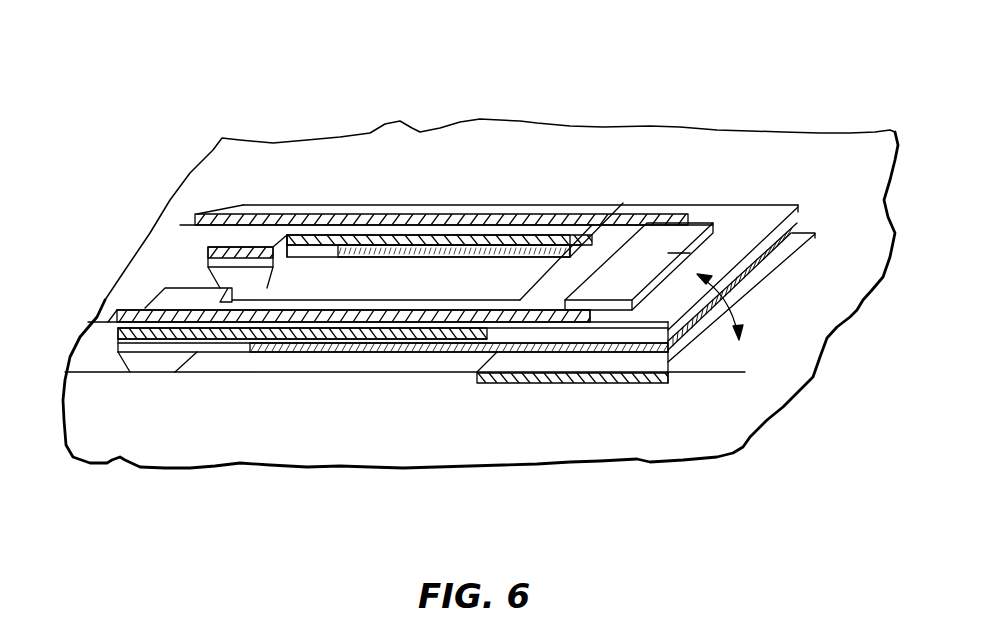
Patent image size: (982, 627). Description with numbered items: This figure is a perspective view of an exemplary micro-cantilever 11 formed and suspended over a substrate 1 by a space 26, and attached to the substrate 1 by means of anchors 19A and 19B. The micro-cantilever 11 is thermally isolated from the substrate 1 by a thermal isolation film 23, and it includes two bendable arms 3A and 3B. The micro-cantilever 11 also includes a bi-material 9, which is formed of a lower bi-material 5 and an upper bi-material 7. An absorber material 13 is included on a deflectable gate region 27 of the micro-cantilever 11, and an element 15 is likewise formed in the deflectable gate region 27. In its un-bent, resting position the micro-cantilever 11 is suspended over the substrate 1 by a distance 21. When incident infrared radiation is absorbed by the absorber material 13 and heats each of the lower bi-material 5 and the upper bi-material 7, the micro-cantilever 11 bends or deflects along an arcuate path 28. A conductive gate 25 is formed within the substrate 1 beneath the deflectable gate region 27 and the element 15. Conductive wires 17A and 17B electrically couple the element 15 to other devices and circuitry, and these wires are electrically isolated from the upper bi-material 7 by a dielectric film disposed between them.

The substrate 1 is at (570, 165).
The bendable arm 3A is at (292, 328).
The bendable arm 3B is at (313, 207).
The lower bi-material 5 is at (327, 347).
The upper bi-material 7 is at (415, 335).
The bi-material 9 is at (371, 333).
The micro-cantilever 11 is at (618, 186).
The absorber material 13 is at (806, 232).
The element 15 is at (690, 253).
The conductive wire 17A is at (168, 313).
The conductive wire 17B is at (470, 217).
The anchor 19A is at (148, 362).
The anchor 19B is at (213, 278).
The distance 21 is at (668, 362).
The thermal isolation film 23 is at (217, 347).
The conductive gate 25 is at (818, 236).
The space 26 is at (453, 360).
The deflectable gate region 27 is at (720, 182).
The arcuate path 28 is at (668, 356).